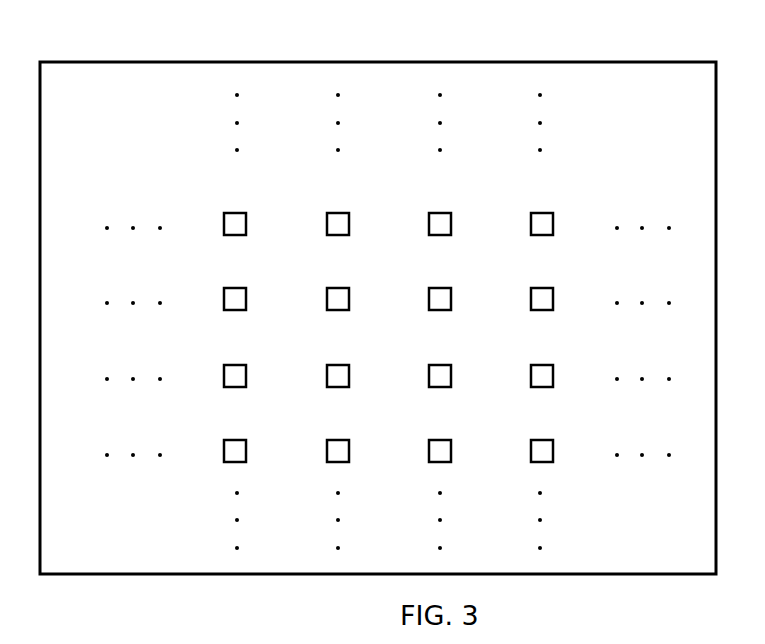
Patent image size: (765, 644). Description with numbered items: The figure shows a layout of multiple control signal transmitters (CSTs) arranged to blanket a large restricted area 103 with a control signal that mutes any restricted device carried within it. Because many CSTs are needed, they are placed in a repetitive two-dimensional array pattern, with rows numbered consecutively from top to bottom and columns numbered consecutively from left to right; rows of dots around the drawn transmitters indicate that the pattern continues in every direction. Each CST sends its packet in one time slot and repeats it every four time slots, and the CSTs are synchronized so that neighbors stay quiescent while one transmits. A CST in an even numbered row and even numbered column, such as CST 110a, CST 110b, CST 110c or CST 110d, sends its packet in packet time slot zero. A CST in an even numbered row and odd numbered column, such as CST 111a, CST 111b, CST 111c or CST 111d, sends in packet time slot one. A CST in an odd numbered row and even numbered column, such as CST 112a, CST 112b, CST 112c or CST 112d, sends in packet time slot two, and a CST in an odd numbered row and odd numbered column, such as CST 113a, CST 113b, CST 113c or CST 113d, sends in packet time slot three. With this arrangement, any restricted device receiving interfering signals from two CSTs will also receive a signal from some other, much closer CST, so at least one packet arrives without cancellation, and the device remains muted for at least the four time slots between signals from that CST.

The restricted area 103 is at (485, 62).
The control signal transmitter in even row and even column 110a is at (237, 213).
The control signal transmitter in even row and odd column 111a is at (340, 213).
The control signal transmitter in even row and even column 110b is at (442, 213).
The control signal transmitter in even row and odd column 111b is at (544, 213).
The control signal transmitter in odd row and even column 112a is at (237, 288).
The control signal transmitter in odd row and odd column 113a is at (340, 288).
The control signal transmitter in odd row and even column 112b is at (442, 288).
The control signal transmitter in odd row and odd column 113b is at (544, 288).
The control signal transmitter in even row and even column 110c is at (236, 365).
The control signal transmitter in even row and odd column 111c is at (339, 365).
The control signal transmitter in even row and even column 110d is at (442, 365).
The control signal transmitter in even row and odd column 111d is at (544, 365).
The control signal transmitter in odd row and even column 112c is at (236, 440).
The control signal transmitter in odd row and odd column 113c is at (339, 440).
The control signal transmitter in odd row and even column 112d is at (442, 440).
The control signal transmitter in odd row and odd column 113d is at (544, 440).